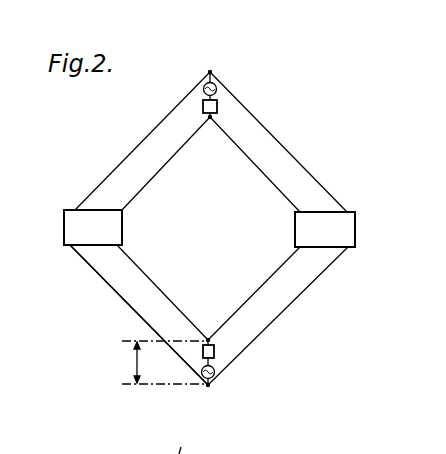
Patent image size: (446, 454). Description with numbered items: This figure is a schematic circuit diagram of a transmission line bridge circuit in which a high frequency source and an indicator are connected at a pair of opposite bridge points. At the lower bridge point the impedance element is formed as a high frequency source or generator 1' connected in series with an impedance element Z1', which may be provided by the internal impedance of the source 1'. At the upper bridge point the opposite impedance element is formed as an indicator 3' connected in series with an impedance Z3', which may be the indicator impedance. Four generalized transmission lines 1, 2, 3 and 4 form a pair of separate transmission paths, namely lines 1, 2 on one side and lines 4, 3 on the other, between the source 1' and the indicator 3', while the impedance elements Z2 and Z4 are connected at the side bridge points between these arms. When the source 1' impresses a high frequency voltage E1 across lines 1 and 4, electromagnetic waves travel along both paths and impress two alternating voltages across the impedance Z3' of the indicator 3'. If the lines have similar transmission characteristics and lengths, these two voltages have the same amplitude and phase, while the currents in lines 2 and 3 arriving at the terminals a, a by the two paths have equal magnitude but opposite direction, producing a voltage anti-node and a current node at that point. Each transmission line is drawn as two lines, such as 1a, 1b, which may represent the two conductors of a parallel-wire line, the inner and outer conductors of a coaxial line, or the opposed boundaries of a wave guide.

The terminals a is at (210, 70).
The transmission line 2 is at (166, 163).
The transmission line 3 is at (278, 142).
The impedance element Z2 is at (93, 227).
The impedance element Z4 is at (325, 229).
The transmission line 1 is at (139, 315).
The drawn line 1a is at (113, 298).
The drawn line 1b is at (140, 263).
The transmission line 4 is at (278, 316).
The indicator 3' is at (230, 83).
The impedance Z3' is at (183, 99).
The impedance element Z1' is at (241, 359).
The high frequency source 1' is at (225, 381).
The high frequency voltage E1 is at (163, 362).